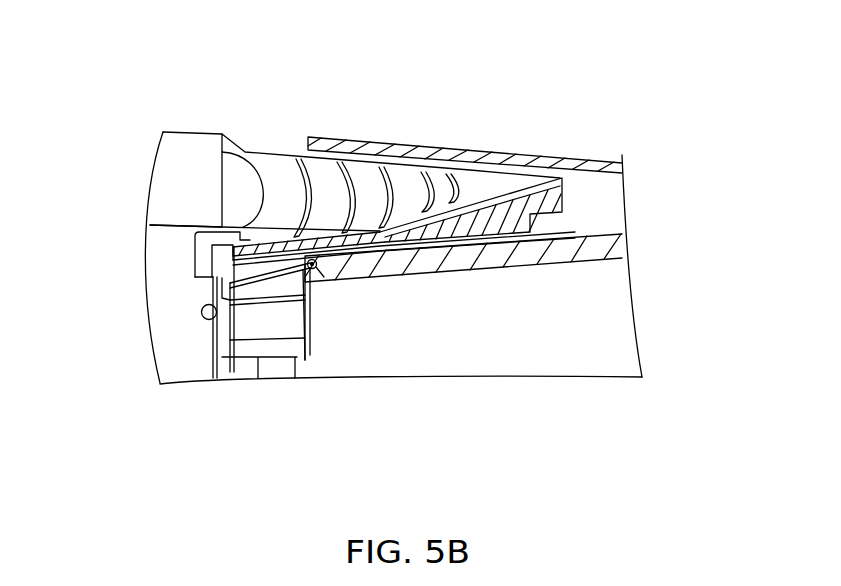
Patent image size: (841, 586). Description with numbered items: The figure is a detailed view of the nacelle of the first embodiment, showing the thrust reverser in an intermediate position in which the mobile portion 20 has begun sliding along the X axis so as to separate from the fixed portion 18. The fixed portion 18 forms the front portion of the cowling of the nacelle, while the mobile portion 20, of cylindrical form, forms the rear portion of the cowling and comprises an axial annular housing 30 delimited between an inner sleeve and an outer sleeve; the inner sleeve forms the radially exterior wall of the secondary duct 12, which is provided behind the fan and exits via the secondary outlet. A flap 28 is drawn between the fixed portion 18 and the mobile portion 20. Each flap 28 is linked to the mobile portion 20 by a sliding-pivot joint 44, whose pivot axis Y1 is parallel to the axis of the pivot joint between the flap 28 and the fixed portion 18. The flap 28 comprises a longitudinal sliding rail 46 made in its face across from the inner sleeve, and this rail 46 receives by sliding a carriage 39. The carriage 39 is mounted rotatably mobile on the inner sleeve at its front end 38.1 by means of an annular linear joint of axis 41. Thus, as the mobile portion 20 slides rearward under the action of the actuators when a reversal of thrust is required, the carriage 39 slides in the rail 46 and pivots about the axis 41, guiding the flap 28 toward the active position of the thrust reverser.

The secondary duct 12 is at (617, 333).
The fixed portion 18 is at (168, 124).
The mobile portion 20 is at (406, 132).
The flap 28 is at (495, 186).
The axial annular housing 30 is at (603, 227).
The axis of annular linear joint 41 is at (310, 267).
The front end of carriage 38.1 is at (310, 267).
The carriage 39 is at (323, 277).
The sliding-pivot joint 44 is at (329, 316).
The longitudinal sliding rail 46 is at (398, 250).
The axis of the pivot Y1 is at (305, 266).